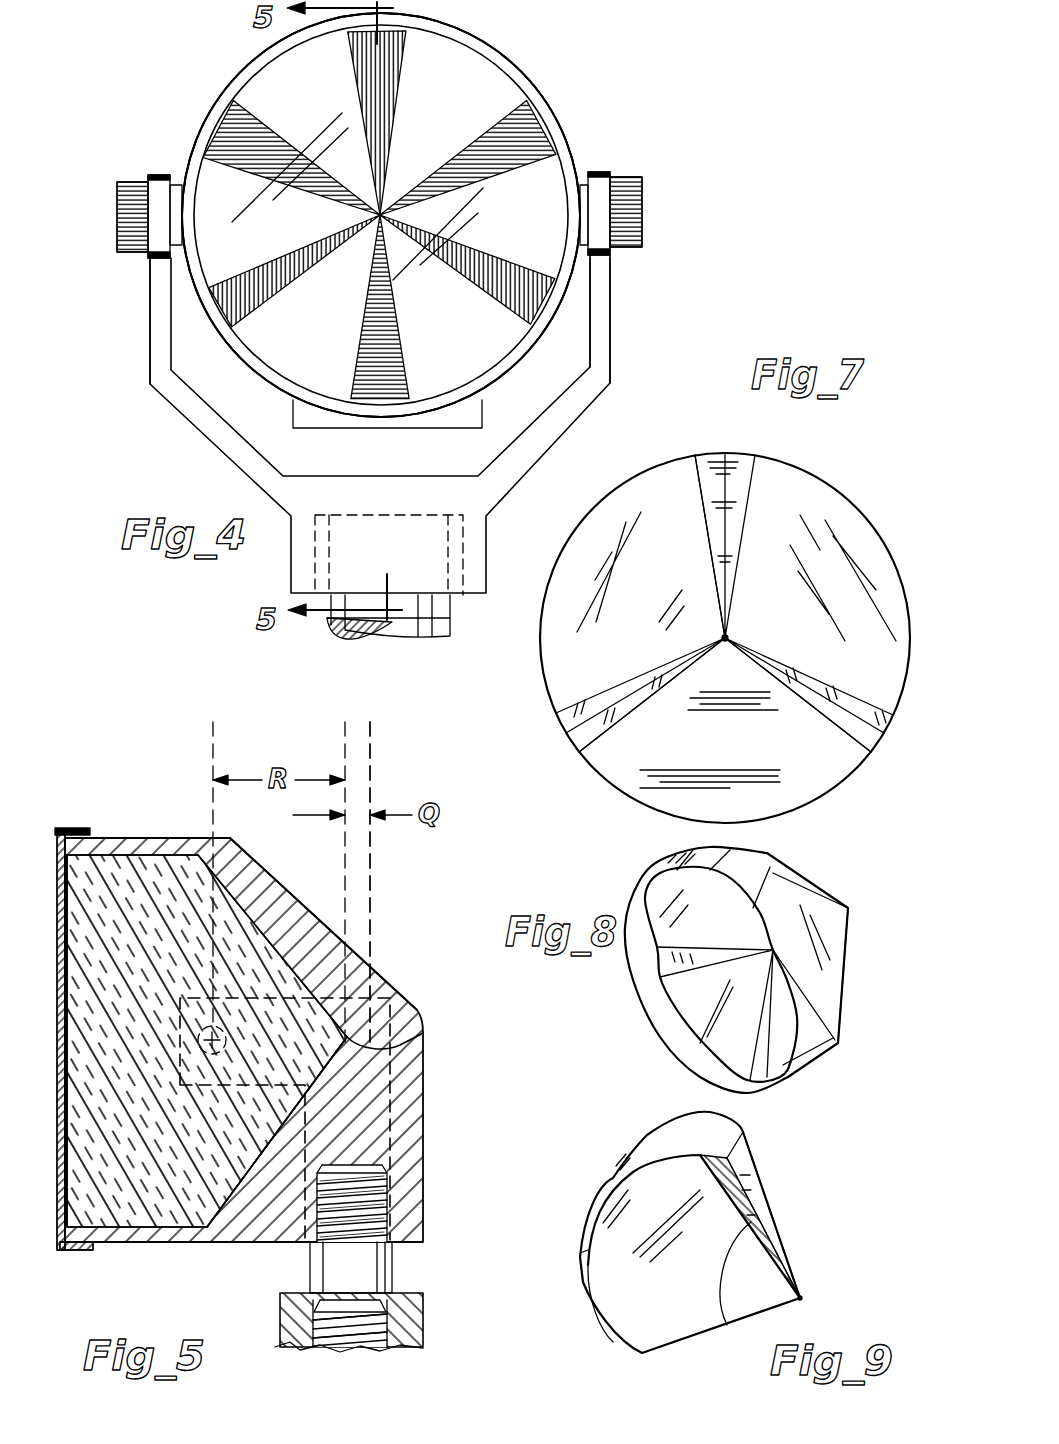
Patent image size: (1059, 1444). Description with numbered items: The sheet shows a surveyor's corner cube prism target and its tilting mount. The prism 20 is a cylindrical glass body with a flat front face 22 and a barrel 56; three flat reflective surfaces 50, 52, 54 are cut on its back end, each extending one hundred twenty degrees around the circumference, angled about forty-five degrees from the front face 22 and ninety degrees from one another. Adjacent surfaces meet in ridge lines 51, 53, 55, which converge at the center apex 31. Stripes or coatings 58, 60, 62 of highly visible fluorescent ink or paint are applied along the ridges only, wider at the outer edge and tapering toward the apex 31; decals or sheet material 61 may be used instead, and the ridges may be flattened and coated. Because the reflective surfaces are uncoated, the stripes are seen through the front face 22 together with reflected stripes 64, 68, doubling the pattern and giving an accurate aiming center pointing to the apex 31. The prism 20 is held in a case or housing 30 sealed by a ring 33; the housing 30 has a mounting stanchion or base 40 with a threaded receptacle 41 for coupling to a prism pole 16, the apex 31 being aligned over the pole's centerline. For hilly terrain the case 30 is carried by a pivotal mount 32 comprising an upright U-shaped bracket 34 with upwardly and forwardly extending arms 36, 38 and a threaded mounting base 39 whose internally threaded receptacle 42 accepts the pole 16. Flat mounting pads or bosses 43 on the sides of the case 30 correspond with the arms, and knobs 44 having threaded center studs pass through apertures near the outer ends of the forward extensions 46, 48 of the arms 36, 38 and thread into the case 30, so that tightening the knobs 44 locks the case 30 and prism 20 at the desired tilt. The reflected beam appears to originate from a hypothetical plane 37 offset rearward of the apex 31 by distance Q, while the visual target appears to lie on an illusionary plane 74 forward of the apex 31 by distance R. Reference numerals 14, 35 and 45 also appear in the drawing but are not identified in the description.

In FIG. 4, the lens mount assembly 14 is at (640, 94).
In FIG. 5, the lens mount assembly 14 is at (416, 798).
In FIG. 4, the prism pole 16 is at (395, 628).
In FIG. 7, the prism 20 is at (842, 462).
In FIG. 8, the prism 20 is at (663, 863).
In FIG. 9, the prism 20 is at (681, 1128).
In FIG. 5, the prism 20 is at (70, 910).
In FIG. 8, the front face 22 is at (677, 1020).
In FIG. 5, the front face 22 is at (72, 1190).
In FIG. 4, the case 30 is at (602, 87).
In FIG. 5, the case 30 is at (172, 842).
In FIG. 7, the apex 31 is at (727, 640).
In FIG. 8, the apex 31 is at (850, 910).
In FIG. 9, the apex 31 is at (800, 1300).
In FIG. 5, the apex 31 is at (423, 1035).
In FIG. 4, the pivotal mount 32 is at (574, 406).
In FIG. 4, the ring 33 is at (515, 75).
In FIG. 5, the ring 33 is at (95, 797).
In FIG. 4, the U-shaped bracket 34 is at (606, 274).
In FIG. 5, the lens body 35 is at (208, 1050).
In FIG. 4, the arm 36 is at (607, 328).
In FIG. 5, the arm 36 is at (398, 1122).
In FIG. 5, the hypothetical plane 37 is at (384, 882).
In FIG. 4, the arm 38 is at (148, 355).
In FIG. 4, the mounting base 39 is at (483, 520).
In FIG. 5, the mounting base 39 is at (416, 1312).
In FIG. 4, the mounting stanchion 40 is at (294, 411).
In FIG. 5, the mounting stanchion 40 is at (244, 1236).
In FIG. 5, the threaded receptacle 41 is at (330, 1220).
In FIG. 4, the internally threaded receptacle 42 is at (448, 596).
In FIG. 5, the internally threaded receptacle 42 is at (368, 1345).
In FIG. 4, the mounting pads 43 is at (179, 175).
In FIG. 4, the knobs 44 is at (125, 250).
In FIG. 5, the screw shank 45 is at (394, 1265).
In FIG. 4, the forward extending tab 46 is at (611, 177).
In FIG. 4, the forwardly extending tab 48 is at (150, 176).
In FIG. 5, the forwardly extending tab 48 is at (385, 985).
In FIG. 7, the reflective surface 50 is at (855, 527).
In FIG. 8, the reflective surface 50 is at (818, 983).
In FIG. 9, the reflective surface 50 is at (767, 1206).
In FIG. 7, the ridge line 51 is at (858, 757).
In FIG. 8, the ridge line 51 is at (837, 1025).
In FIG. 7, the reflective surface 52 is at (630, 777).
In FIG. 7, the ridge line 53 is at (580, 753).
In FIG. 7, the reflective surface 54 is at (614, 494).
In FIG. 9, the reflective surface 54 is at (680, 1298).
In FIG. 7, the ridge line 55 is at (736, 465).
In FIG. 8, the ridge line 55 is at (830, 895).
In FIG. 8, the barrel 56 is at (712, 858).
In FIG. 9, the barrel 56 is at (649, 1135).
In FIG. 4, the stripe 58 is at (248, 325).
In FIG. 7, the stripe 58 is at (893, 720).
In FIG. 8, the stripe 58 is at (835, 1035).
In FIG. 4, the stripe 60 is at (550, 255).
In FIG. 7, the stripe 60 is at (568, 720).
In FIG. 9, the sheet material 61 is at (772, 1238).
In FIG. 4, the stripe 62 is at (390, 108).
In FIG. 7, the stripe 62 is at (746, 460).
In FIG. 8, the stripe 62 is at (797, 877).
In FIG. 9, the stripe 62 is at (737, 1185).
In FIG. 4, the reflected stripe 64 is at (252, 118).
In FIG. 4, the reflected stripe 68 is at (520, 153).
In FIG. 5, the illusionary plane 74 is at (210, 763).